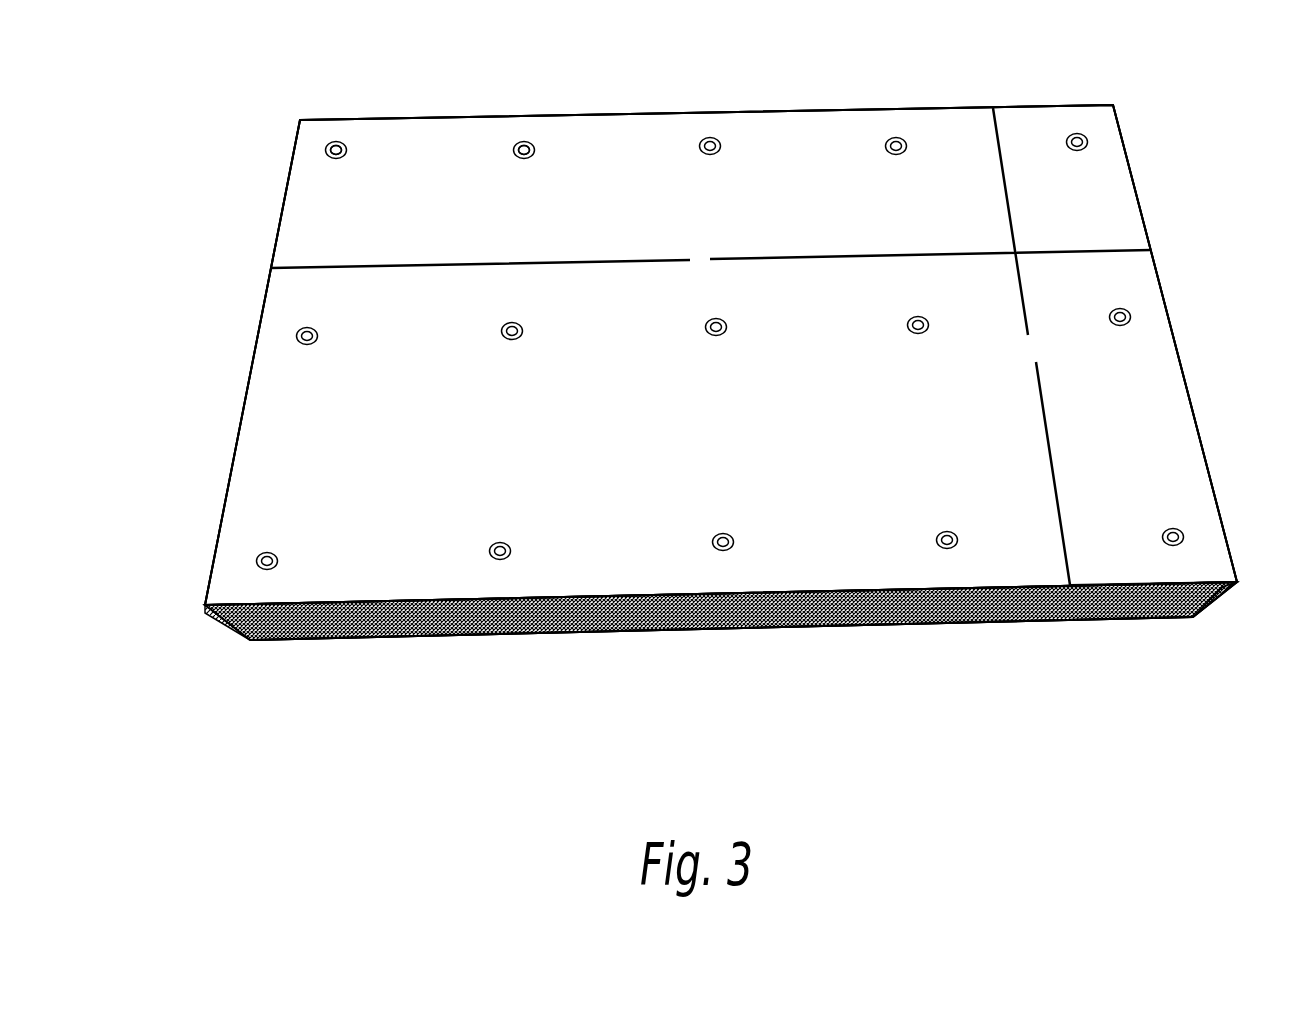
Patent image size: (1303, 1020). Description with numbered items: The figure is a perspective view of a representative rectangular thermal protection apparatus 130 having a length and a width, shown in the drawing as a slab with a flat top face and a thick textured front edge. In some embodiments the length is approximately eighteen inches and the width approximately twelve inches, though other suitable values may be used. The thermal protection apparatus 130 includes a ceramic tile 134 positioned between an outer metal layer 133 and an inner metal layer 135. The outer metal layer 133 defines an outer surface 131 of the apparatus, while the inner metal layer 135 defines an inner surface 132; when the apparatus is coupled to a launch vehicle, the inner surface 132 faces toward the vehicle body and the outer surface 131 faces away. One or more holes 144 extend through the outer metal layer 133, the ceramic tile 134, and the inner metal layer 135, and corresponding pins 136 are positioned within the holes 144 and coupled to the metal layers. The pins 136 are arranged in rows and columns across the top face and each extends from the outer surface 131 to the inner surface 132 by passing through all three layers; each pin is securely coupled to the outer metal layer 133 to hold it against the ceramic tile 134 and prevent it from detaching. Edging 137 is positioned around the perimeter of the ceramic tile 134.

The thermal protection apparatus 130 is at (200, 319).
The outer surface 131 is at (638, 175).
The inner surface 132 is at (728, 645).
The outer metal layer 133 is at (387, 557).
The ceramic tile 134 is at (578, 515).
The inner metal layer 135 is at (626, 650).
The pins 136 is at (524, 141).
The edging 137 is at (977, 627).
The holes 144 is at (545, 146).